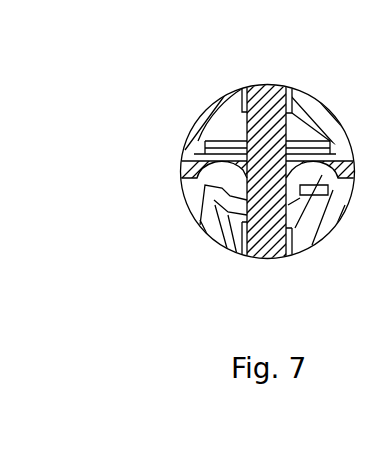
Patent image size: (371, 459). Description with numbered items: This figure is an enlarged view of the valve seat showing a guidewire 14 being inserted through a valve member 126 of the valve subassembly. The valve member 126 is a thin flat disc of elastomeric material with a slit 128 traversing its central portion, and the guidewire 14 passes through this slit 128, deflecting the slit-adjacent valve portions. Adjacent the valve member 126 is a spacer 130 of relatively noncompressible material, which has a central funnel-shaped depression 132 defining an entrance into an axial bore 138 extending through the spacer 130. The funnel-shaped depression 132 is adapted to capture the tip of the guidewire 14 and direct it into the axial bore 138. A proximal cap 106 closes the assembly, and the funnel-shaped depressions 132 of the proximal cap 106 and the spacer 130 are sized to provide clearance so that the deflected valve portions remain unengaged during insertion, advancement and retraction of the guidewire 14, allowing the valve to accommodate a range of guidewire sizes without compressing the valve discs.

The guidewire 14 is at (283, 117).
The proximal cap 106 is at (205, 142).
The valve member 126 is at (182, 163).
The spacer 130 is at (182, 200).
The funnel-shaped depression 132 is at (221, 214).
The slit 128 is at (243, 222).
The axial bore 138 is at (282, 254).